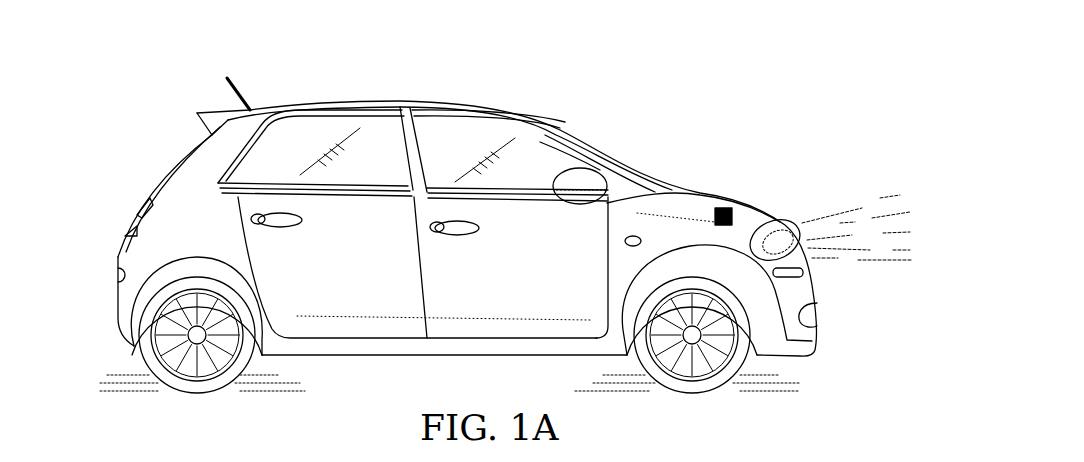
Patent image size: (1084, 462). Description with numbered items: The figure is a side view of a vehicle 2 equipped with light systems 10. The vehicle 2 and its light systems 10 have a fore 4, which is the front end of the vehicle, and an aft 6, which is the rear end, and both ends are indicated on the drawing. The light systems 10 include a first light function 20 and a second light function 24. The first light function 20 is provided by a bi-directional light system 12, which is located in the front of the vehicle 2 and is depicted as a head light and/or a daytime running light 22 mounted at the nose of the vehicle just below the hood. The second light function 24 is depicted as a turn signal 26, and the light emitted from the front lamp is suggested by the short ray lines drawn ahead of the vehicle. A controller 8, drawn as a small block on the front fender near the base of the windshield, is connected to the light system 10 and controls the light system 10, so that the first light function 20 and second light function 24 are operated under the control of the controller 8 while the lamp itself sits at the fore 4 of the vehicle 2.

The vehicle 2 is at (641, 66).
The fore 4 is at (881, 128).
The aft 6 is at (103, 224).
The controller 8 is at (723, 207).
The light system 10 is at (827, 164).
The bi-directional light system 12 is at (786, 204).
The first light function 20 is at (785, 250).
The head light and/or daytime running light 22 is at (778, 241).
The second light function 24 is at (808, 262).
The turn signal 26 is at (860, 246).